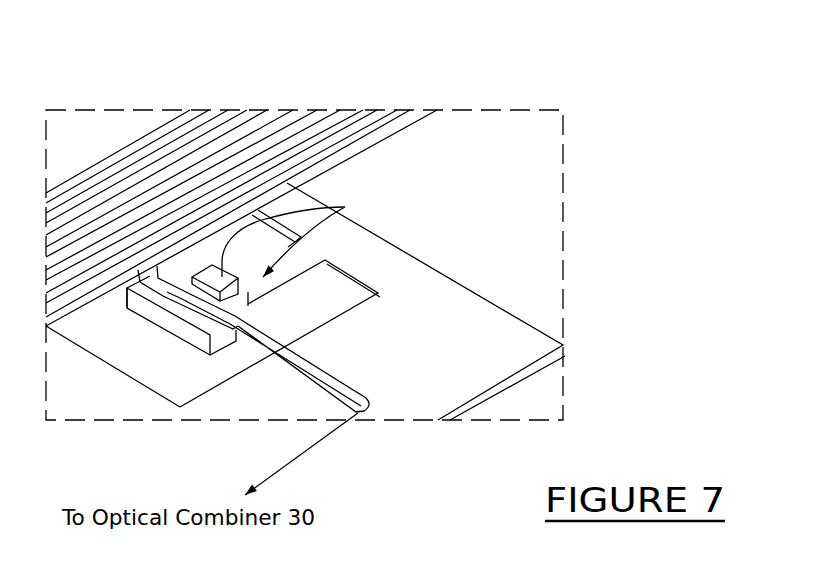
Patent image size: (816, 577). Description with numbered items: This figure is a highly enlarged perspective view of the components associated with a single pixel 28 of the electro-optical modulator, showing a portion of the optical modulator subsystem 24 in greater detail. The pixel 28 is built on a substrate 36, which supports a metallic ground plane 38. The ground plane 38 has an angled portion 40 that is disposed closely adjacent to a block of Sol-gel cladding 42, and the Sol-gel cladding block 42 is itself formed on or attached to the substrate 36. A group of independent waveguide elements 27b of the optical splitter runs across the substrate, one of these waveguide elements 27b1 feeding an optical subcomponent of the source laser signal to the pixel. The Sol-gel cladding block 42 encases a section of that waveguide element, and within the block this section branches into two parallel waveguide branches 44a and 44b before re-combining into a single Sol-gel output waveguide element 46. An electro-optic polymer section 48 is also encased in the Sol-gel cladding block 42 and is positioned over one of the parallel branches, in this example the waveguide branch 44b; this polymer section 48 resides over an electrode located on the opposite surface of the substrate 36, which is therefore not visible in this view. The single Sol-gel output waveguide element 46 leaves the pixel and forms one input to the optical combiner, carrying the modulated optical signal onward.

The optical modulator subsystem 24 is at (273, 60).
The sections of the optical splitter 27b is at (172, 108).
The waveguide element 27b1 is at (412, 108).
The pixel 28 is at (172, 351).
The substrate 36 is at (541, 165).
The metallic ground plane 38 is at (243, 276).
The angled portion 40 is at (295, 229).
The Sol-gel cladding block 42 is at (126, 305).
The waveguide branch 44a is at (165, 297).
The waveguide branch 44b is at (181, 278).
The Sol-gel output waveguide element 46 is at (363, 402).
The electro-optic polymer section 48 is at (262, 299).